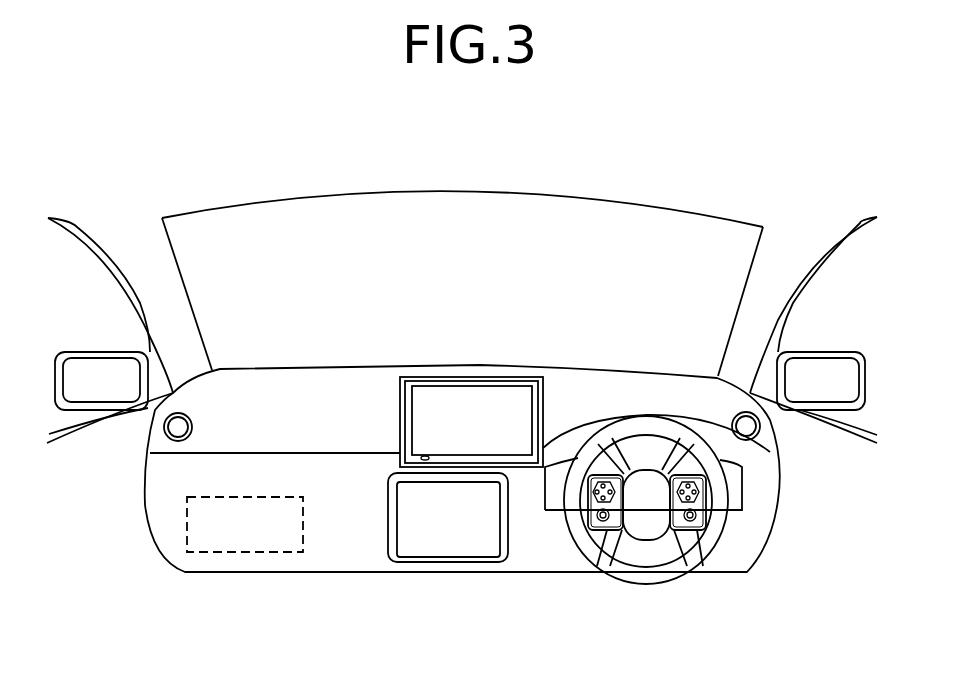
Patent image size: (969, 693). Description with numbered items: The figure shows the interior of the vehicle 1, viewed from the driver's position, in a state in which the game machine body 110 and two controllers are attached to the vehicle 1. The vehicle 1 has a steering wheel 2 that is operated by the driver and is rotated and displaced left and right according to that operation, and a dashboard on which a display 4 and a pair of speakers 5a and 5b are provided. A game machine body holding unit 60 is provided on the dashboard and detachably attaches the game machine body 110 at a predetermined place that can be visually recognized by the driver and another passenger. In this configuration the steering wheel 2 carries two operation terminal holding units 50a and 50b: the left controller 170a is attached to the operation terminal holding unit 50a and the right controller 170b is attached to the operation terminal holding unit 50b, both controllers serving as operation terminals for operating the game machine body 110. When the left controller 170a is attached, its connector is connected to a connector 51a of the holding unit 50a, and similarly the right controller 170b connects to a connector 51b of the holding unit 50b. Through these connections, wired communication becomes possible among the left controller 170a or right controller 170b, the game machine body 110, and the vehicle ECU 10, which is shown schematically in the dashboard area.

The vehicle 1 is at (578, 142).
The steering wheel 2 is at (652, 585).
The display 4 is at (388, 518).
The speaker 5a is at (160, 427).
The speaker 5b is at (757, 433).
The vehicle ECU 10 is at (187, 522).
The operation terminal holding unit 50a is at (607, 472).
The operation terminal holding unit 50b is at (688, 475).
The connector 51a is at (614, 530).
The connector 51b is at (686, 530).
The game machine body holding unit 60 is at (400, 407).
The game machine body 110 is at (478, 380).
The left controller 170a is at (609, 530).
The right controller 170b is at (692, 530).